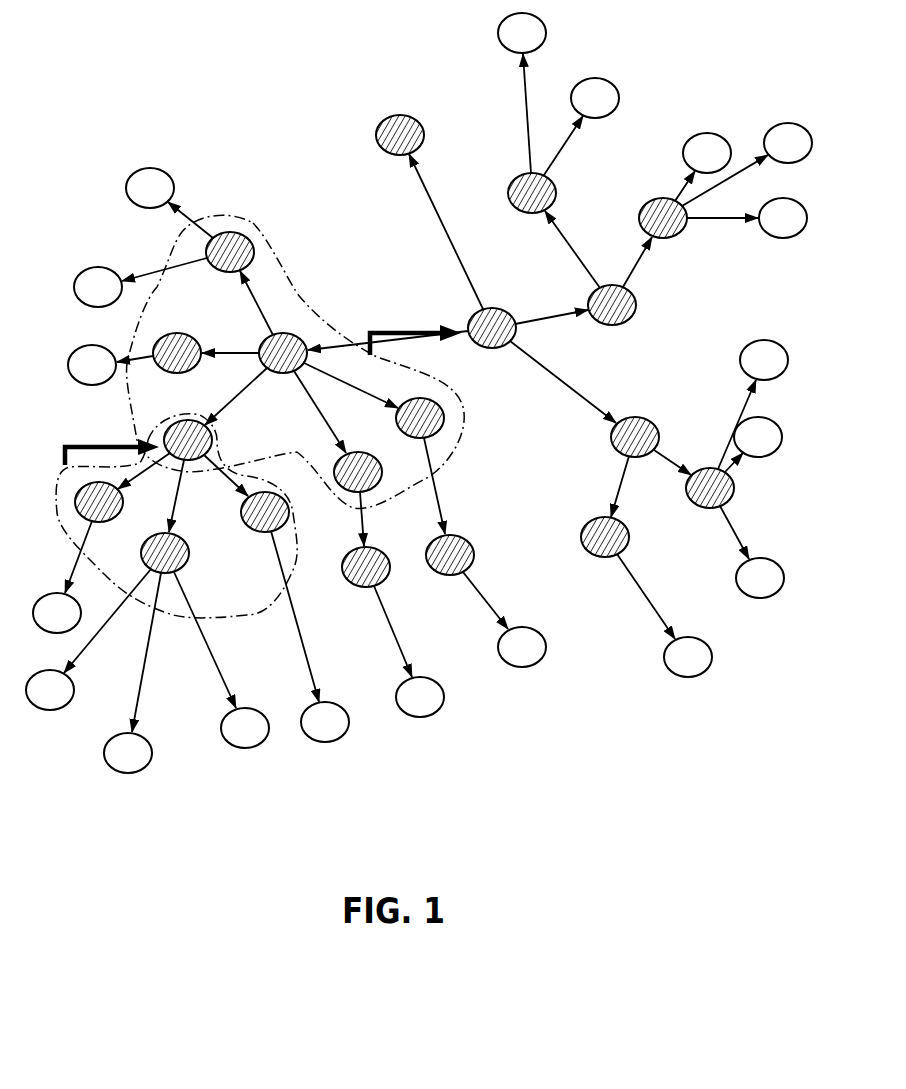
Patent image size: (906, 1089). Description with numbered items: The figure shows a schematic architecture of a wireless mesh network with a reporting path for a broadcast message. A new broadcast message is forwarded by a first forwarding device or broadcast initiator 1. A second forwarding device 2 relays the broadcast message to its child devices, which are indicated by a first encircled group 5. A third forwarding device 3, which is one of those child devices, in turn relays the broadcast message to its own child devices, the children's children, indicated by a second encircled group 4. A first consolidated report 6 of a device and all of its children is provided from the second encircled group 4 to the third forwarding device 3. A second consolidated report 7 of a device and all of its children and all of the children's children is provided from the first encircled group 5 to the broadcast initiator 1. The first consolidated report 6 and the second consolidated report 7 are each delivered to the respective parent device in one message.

The broadcast initiator 1 is at (481, 302).
The second forwarding device 2 is at (284, 330).
The third forwarding device 3 is at (216, 440).
The second encircled group 4 is at (249, 618).
The first encircled group 5 is at (451, 453).
The first consolidated report 6 is at (82, 436).
The second consolidated report 7 is at (383, 320).